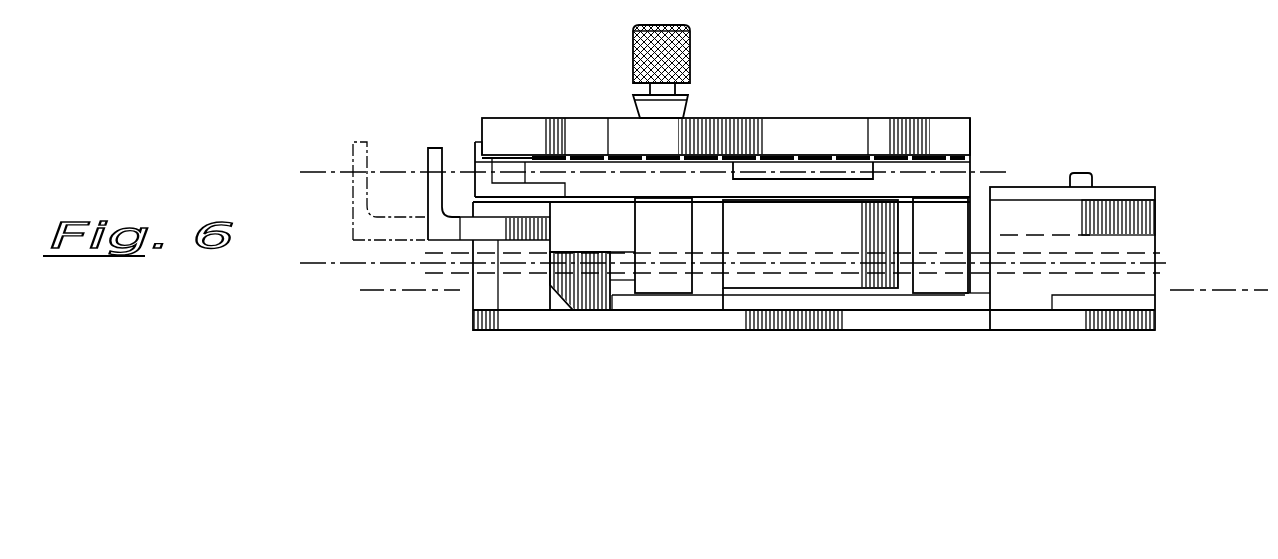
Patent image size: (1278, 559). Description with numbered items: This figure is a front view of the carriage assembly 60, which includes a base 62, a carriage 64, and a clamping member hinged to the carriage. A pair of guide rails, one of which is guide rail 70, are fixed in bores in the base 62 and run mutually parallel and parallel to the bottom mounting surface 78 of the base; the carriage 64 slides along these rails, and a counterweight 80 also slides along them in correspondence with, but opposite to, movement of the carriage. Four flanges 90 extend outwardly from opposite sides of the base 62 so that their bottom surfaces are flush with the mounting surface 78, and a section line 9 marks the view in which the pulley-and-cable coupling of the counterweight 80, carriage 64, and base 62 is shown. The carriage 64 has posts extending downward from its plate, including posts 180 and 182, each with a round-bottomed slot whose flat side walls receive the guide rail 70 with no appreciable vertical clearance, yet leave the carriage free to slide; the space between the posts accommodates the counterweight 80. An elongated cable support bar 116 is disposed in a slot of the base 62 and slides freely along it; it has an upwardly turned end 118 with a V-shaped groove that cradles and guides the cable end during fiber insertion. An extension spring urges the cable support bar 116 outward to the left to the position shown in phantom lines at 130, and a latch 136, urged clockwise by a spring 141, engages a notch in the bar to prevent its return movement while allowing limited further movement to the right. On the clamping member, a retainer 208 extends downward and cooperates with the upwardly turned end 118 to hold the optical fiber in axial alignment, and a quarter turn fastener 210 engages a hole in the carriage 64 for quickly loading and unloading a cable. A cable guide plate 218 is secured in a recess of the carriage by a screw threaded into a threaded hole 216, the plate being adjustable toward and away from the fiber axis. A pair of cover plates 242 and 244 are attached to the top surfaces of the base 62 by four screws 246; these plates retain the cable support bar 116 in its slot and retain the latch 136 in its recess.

The carriage assembly 60 is at (776, 108).
The base 62 is at (550, 298).
The carriage 64 is at (956, 166).
The guide rail 70 is at (875, 265).
The bottom mounting surface 78 is at (667, 312).
The counterweight 80 is at (814, 237).
The flanges 90 is at (698, 295).
The section line 9- 9 is at (387, 300).
The cable support bar 116 is at (440, 230).
The upwardly turned end 118 is at (430, 150).
The phantom-line position 130 is at (358, 145).
The latch 136 is at (1090, 0).
The spring 141 is at (984, 6).
The post 180 is at (682, 232).
The post 182 is at (962, 232).
The retainer 208 is at (483, 163).
The quarter turn fastener 210 is at (690, 58).
The threaded hole 216 is at (882, 6).
The cable guide plate 218 is at (852, 172).
The cover plate 242 is at (1127, 195).
The cover plate 244 is at (558, 205).
The screws 246 is at (1080, 173).